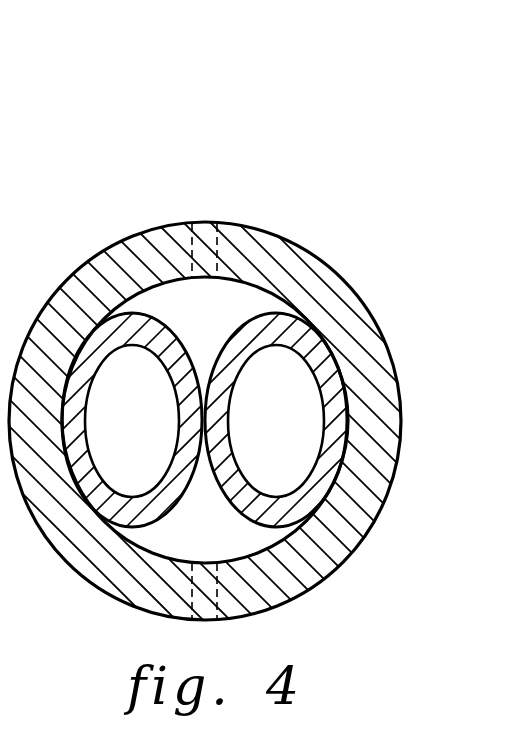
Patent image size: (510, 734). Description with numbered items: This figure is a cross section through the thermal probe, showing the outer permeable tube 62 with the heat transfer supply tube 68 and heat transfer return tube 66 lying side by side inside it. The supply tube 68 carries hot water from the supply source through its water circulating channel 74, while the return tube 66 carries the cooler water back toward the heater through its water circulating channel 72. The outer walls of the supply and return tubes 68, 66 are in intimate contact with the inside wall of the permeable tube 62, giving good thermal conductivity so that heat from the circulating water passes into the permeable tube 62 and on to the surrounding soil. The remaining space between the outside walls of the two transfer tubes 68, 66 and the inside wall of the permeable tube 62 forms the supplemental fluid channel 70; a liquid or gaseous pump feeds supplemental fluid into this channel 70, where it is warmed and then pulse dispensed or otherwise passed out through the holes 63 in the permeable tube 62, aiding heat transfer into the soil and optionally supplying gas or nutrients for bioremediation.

The permeable tube 62 is at (336, 270).
The holes 63 is at (204, 205).
The heat transfer return tube 66 is at (233, 330).
The heat transfer supply tube 68 is at (148, 316).
The supplemental fluid channel 70 is at (223, 545).
The water circulating channel 72 is at (298, 432).
The water circulating channel 74 is at (147, 432).